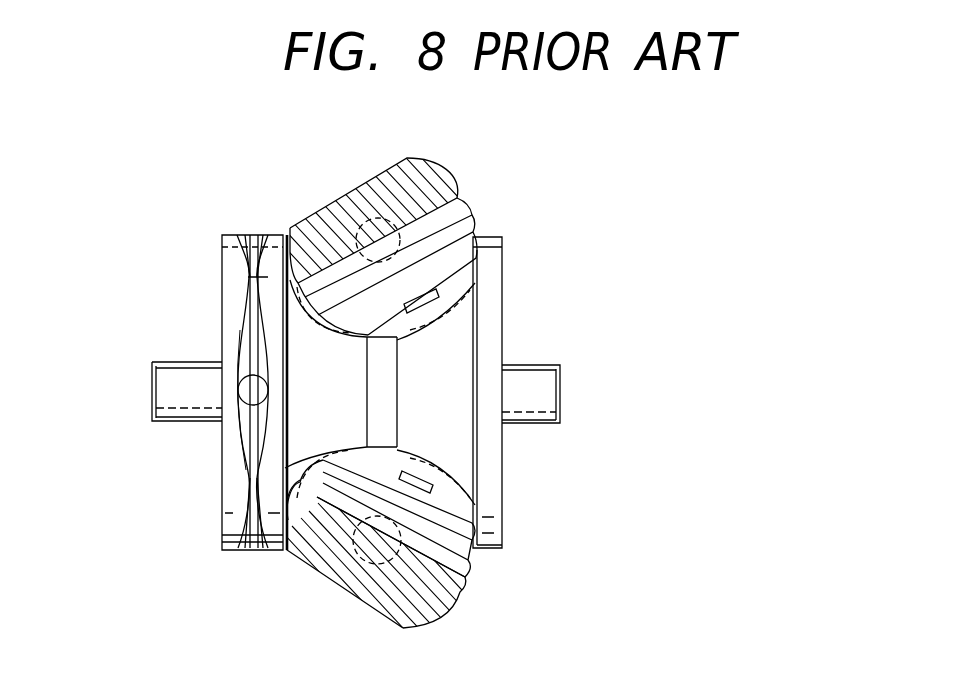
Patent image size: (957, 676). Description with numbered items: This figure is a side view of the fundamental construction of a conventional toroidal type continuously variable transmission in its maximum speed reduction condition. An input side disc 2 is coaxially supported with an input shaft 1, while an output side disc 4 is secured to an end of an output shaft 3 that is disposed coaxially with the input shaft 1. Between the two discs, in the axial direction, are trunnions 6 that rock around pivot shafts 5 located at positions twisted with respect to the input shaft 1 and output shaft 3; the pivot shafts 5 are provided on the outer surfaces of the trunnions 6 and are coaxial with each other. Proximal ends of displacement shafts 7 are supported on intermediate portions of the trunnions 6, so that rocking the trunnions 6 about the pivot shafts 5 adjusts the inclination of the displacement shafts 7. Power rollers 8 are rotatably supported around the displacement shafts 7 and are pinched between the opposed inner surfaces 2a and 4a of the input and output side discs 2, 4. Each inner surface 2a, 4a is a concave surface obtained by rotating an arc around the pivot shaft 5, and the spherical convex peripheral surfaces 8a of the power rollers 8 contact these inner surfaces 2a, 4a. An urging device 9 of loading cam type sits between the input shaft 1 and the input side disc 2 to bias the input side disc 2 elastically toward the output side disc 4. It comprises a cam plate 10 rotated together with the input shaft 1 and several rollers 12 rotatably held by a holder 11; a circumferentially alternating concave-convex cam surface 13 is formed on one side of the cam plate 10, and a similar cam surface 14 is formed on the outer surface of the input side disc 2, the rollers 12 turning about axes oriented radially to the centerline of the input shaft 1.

The input shaft 1 is at (160, 402).
The input side disc 2 is at (248, 277).
The inner surface 2a is at (318, 548).
The output shaft 3 is at (560, 401).
The output side disc 4 is at (495, 353).
The inner surface 4a is at (420, 330).
The pivot shaft 5 is at (370, 355).
The trunnion 6 is at (455, 188).
The displacement shaft 7 is at (438, 316).
The power roller 8 is at (418, 275).
The peripheral surface 8a is at (437, 262).
The urging device 9 is at (238, 234).
The cam plate 10 is at (221, 297).
The holder 11 is at (251, 235).
The roller 12 is at (268, 237).
The cam surface 13 is at (247, 336).
The cam surface 14 is at (260, 423).